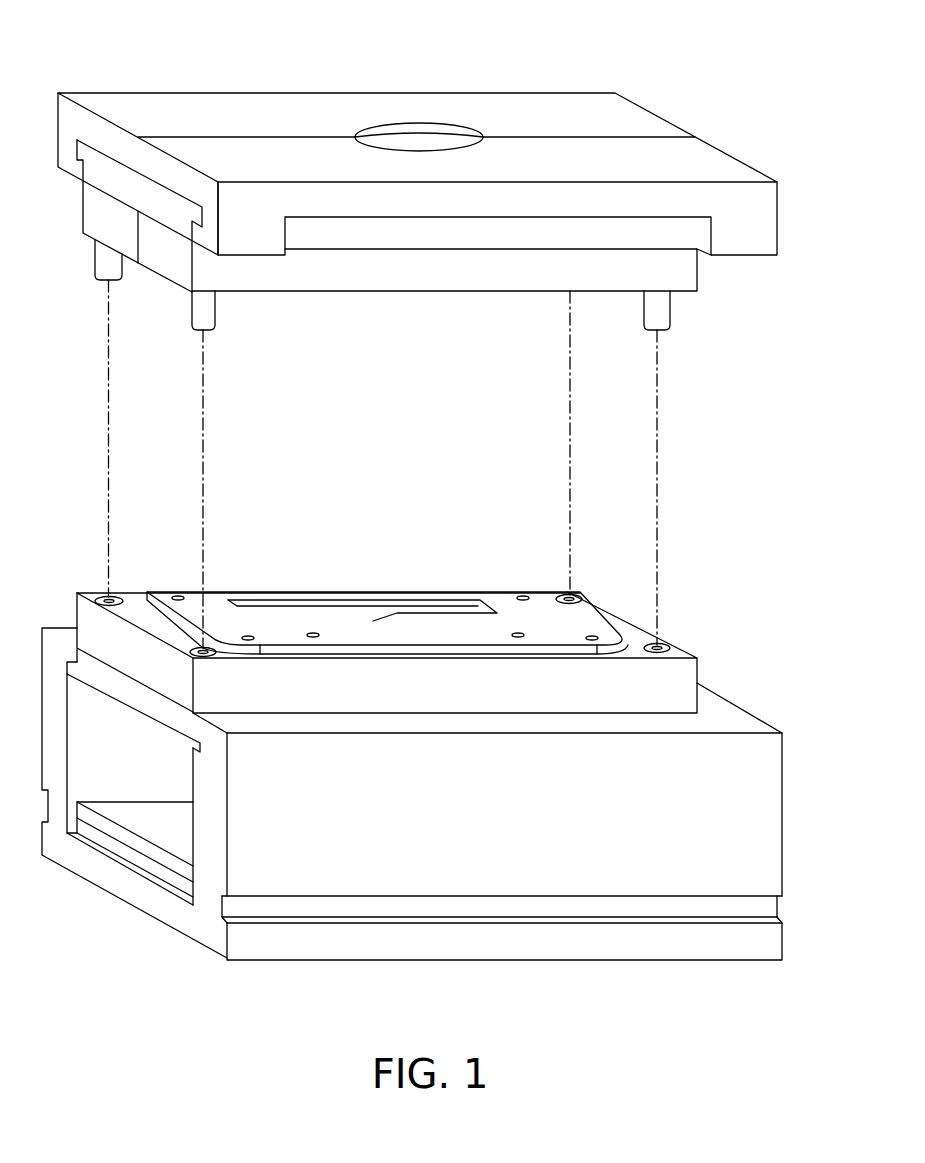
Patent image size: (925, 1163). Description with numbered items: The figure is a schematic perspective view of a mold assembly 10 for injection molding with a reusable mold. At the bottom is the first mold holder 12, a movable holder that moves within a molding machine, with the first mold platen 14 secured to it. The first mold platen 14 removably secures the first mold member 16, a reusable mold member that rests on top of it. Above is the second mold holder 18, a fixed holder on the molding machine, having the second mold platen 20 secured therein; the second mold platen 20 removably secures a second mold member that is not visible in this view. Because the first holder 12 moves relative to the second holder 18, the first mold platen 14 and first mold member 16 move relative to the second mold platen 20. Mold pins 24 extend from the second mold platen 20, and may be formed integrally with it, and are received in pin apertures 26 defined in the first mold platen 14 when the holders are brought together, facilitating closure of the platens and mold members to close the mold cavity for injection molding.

The mold assembly 10 is at (795, 114).
The first mold holder 12 is at (302, 870).
The first mold platen 14 is at (93, 624).
The first mold member 16 is at (263, 622).
The second mold holder 18 is at (542, 110).
The second mold platen 20 is at (113, 178).
The mold pins 24 is at (112, 263).
The pin apertures 26 is at (107, 597).